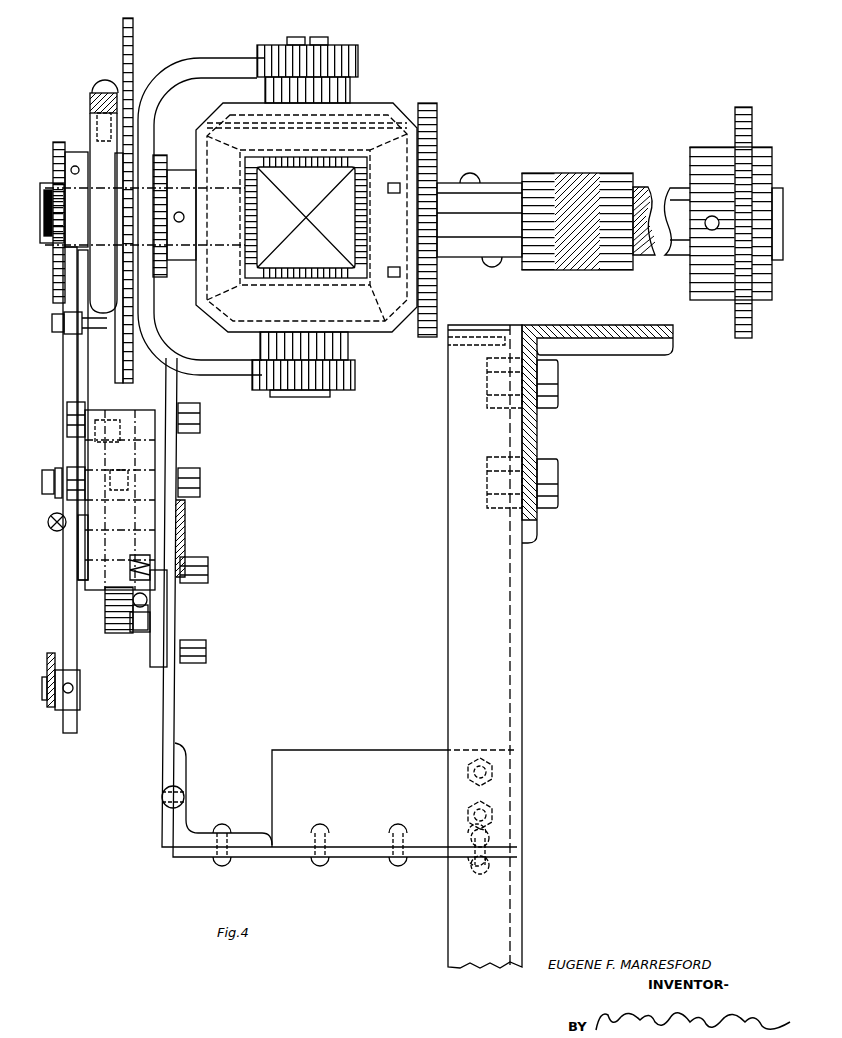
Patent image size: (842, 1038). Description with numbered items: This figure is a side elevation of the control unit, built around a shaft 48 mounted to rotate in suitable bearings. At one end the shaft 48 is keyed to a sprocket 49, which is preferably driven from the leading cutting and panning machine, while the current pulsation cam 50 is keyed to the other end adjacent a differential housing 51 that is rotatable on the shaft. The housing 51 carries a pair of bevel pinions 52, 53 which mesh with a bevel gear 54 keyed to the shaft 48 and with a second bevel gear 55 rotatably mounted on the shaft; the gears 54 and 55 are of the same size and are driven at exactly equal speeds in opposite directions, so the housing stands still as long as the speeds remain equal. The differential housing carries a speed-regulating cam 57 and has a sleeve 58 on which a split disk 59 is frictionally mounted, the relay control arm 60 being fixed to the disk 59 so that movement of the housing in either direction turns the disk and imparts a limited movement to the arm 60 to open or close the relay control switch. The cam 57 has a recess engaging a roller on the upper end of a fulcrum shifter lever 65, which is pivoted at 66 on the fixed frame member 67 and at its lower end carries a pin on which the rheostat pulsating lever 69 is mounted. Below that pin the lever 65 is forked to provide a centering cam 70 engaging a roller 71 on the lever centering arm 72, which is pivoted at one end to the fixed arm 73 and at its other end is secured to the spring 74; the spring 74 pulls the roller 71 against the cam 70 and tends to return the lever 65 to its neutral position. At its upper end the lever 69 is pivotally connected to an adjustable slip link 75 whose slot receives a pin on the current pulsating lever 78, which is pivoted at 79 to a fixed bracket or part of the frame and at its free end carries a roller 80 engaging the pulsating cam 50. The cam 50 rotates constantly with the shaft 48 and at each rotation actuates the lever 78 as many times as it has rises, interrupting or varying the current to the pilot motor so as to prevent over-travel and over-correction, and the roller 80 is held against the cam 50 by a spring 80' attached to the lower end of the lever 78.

The shaft 48 is at (640, 188).
The sprocket 49 is at (737, 110).
The current pulsation cam 50 is at (57, 145).
The differential housing 51 is at (207, 60).
The bevel pinion 52 is at (373, 108).
The bevel pinion 53 is at (370, 333).
The bevel gear 54 is at (438, 113).
The second bevel gear 55 is at (412, 135).
The speed-regulating cam 57 is at (134, 27).
The sleeve 58 is at (167, 161).
The split disk 59 is at (92, 125).
The relay control arm 60 is at (95, 98).
The fulcrum shifter lever 65 is at (100, 543).
The pivot 66 is at (86, 531).
The fixed frame member 67 is at (178, 715).
The rheostat pulsating lever 69 is at (66, 610).
The centering cam 70 is at (118, 594).
The roller 71 is at (112, 621).
The lever centering arm 72 is at (140, 633).
The fixed arm 73 is at (160, 606).
The spring 74 is at (155, 570).
The adjustable slip link 75 is at (57, 470).
The current pulsating lever 78 is at (72, 290).
The pivot 79 is at (52, 323).
The roller 80 is at (50, 446).
The spring 80' is at (42, 520).